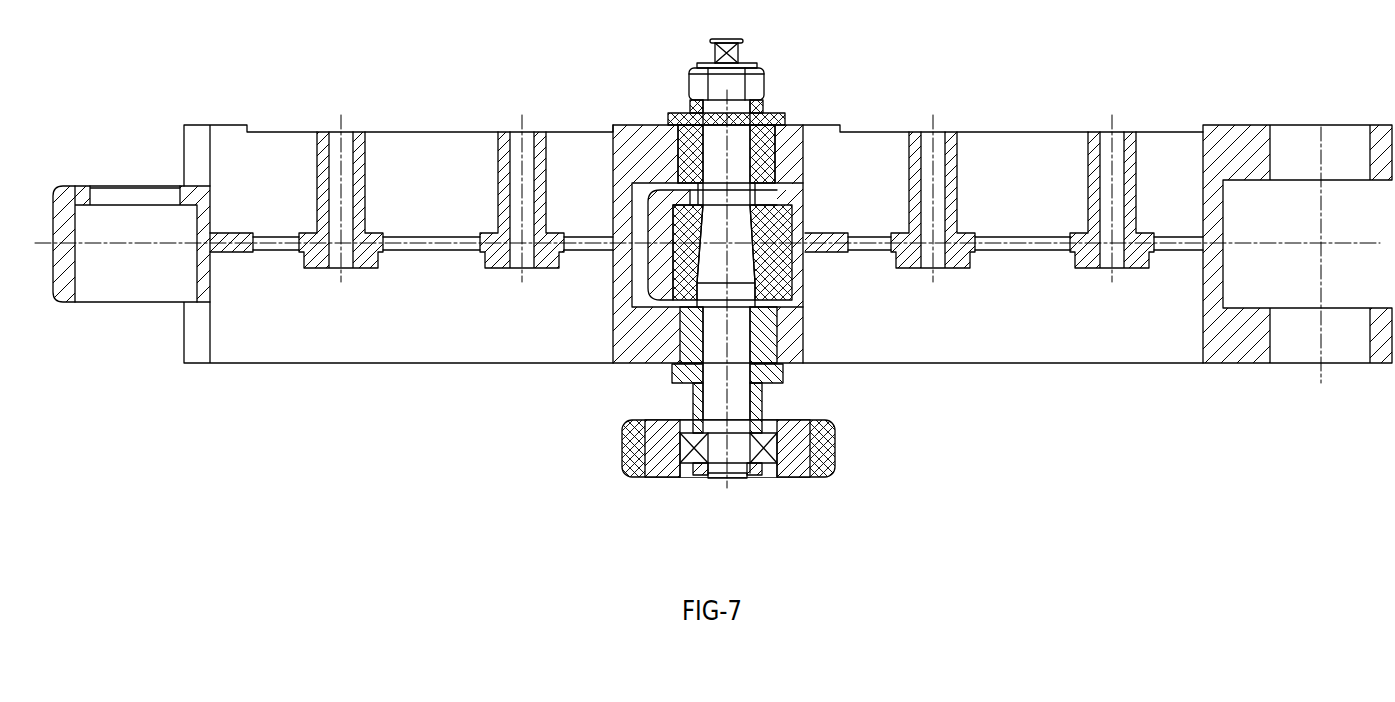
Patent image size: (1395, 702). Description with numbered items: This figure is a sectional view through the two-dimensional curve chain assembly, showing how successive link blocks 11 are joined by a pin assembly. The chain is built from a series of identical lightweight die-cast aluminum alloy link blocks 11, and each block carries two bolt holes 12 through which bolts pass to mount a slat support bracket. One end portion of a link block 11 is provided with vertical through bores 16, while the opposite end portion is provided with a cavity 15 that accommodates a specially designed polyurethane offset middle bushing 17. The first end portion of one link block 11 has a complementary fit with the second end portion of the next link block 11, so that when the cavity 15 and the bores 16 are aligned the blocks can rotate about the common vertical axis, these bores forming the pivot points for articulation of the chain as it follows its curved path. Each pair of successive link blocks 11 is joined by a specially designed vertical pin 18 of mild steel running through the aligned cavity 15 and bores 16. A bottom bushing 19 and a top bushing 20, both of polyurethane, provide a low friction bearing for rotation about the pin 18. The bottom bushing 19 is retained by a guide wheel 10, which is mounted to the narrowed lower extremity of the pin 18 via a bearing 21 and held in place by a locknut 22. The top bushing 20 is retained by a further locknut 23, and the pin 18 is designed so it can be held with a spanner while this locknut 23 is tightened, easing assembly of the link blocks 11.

The guide wheel 10 is at (836, 455).
The link block 11 is at (357, 366).
The bolt holes 12 is at (933, 128).
The cavity 15 is at (143, 263).
The vertical through bores 16 is at (1323, 130).
The offset middle bushing 17 is at (775, 262).
The vertical pin 18 is at (740, 37).
The bottom bushing 19 is at (785, 375).
The top bushing 20 is at (668, 112).
The bearing 21 is at (770, 465).
The locknut 22 is at (757, 479).
The locknut 23 is at (759, 75).